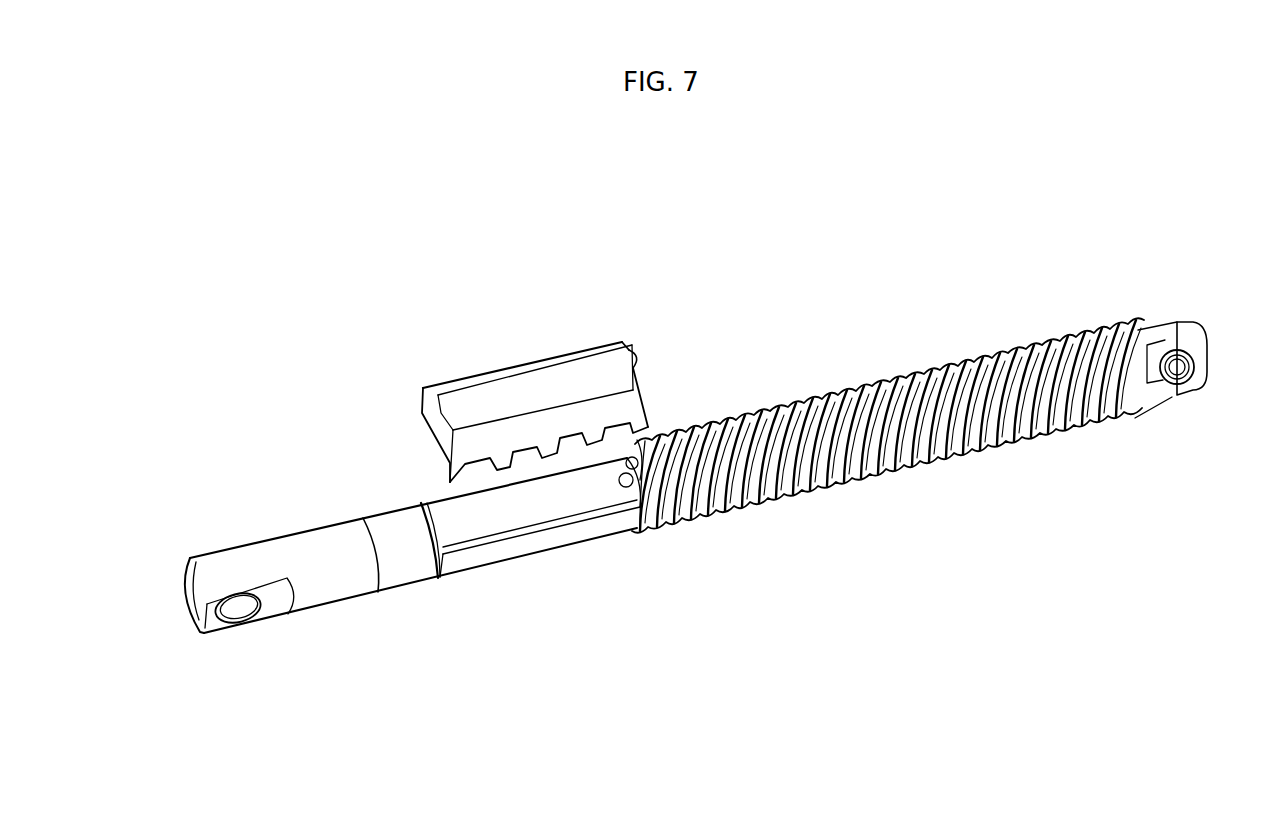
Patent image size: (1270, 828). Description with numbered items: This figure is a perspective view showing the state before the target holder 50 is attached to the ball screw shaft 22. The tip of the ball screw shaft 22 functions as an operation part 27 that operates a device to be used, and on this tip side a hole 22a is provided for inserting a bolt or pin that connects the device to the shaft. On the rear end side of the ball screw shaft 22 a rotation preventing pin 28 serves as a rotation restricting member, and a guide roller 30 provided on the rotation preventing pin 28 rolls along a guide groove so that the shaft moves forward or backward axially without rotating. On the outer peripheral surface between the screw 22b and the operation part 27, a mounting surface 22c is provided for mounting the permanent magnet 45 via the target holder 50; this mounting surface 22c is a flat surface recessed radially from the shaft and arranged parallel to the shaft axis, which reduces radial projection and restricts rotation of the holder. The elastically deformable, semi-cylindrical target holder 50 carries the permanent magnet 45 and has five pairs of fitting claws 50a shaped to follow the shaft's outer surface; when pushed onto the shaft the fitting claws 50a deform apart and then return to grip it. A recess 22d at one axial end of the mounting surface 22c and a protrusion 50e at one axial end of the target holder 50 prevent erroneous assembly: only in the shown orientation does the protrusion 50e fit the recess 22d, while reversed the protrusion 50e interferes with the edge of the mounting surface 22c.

The ball screw shaft 22 is at (876, 384).
The hole 22a is at (241, 606).
The screw 22b is at (945, 440).
The mounting surface 22c is at (467, 528).
The recess 22d is at (633, 457).
The operation part 27 is at (217, 565).
The rotation preventing pin 28 is at (1180, 370).
The guide roller 30 is at (1163, 353).
The permanent magnet 45 is at (498, 388).
The target holder 50 is at (567, 423).
The fitting claws 50a is at (630, 437).
The protrusion 50e is at (633, 362).